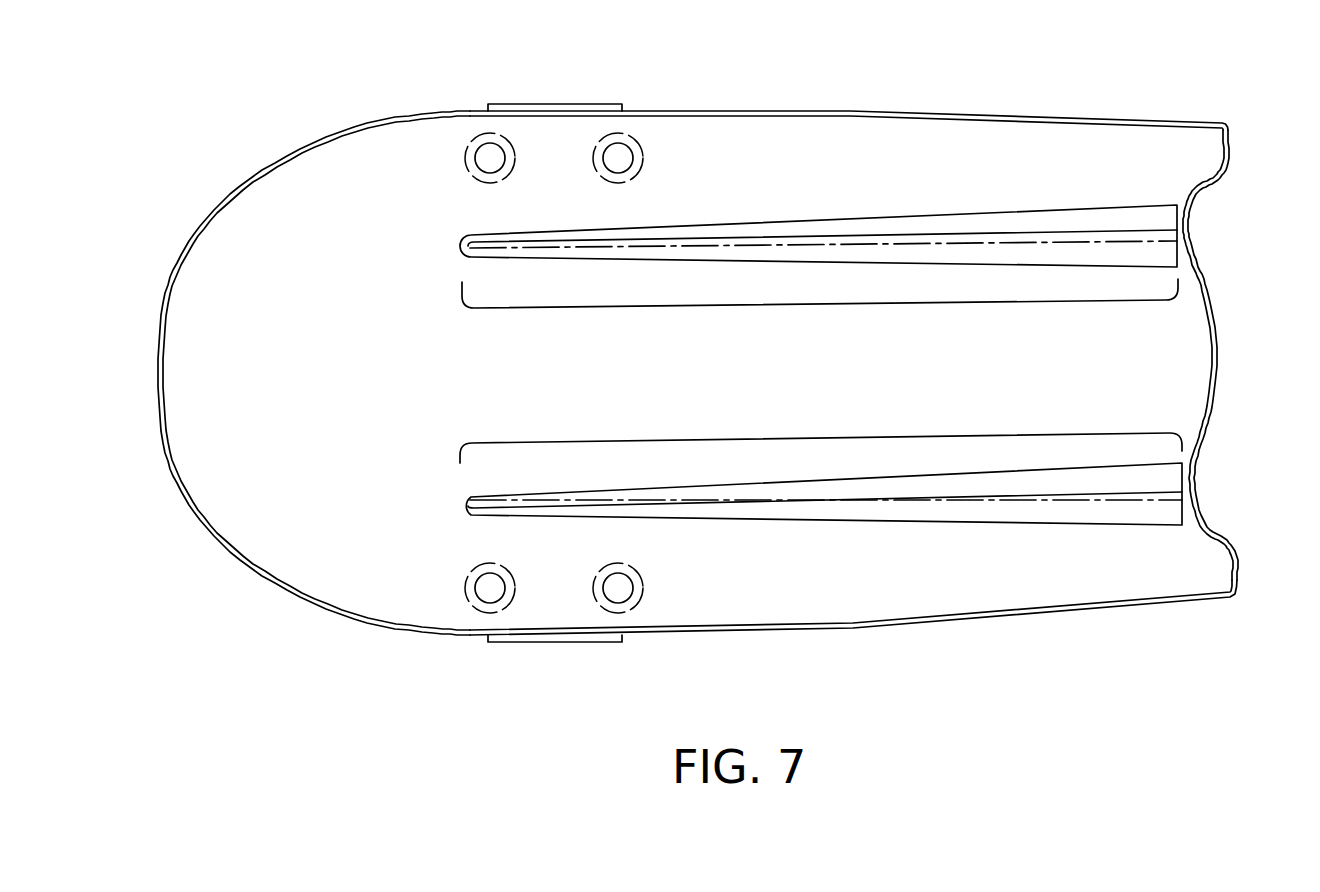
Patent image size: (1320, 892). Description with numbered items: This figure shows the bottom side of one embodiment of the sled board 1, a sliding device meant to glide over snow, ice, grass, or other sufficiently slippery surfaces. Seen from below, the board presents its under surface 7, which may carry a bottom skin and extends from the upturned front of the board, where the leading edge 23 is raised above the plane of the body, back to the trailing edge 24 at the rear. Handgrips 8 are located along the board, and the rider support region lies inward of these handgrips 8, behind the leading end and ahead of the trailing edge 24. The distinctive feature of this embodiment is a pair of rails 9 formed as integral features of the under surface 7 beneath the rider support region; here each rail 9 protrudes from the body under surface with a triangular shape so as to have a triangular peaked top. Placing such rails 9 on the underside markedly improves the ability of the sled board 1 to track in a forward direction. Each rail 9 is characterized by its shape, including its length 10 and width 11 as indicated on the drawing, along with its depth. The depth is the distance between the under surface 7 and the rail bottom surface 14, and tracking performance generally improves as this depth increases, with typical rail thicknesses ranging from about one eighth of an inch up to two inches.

The sled board 1 is at (304, 96).
The under surface 7 is at (855, 637).
The handgrip 8 is at (545, 104).
The rail 9 is at (866, 217).
The length 10 is at (821, 371).
The width 11 is at (442, 205).
The rail bottom surface 14 is at (1052, 238).
The leading edge 23 is at (159, 377).
The trailing edge 24 is at (1221, 360).